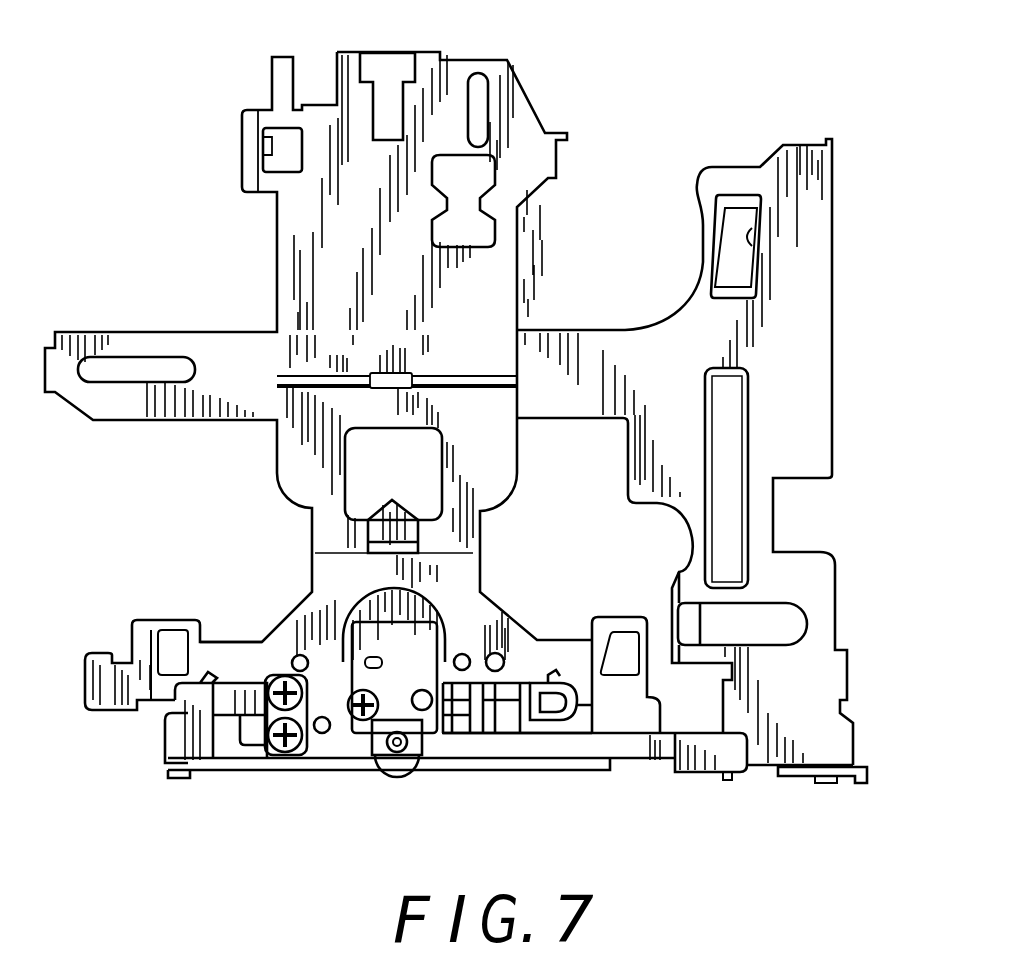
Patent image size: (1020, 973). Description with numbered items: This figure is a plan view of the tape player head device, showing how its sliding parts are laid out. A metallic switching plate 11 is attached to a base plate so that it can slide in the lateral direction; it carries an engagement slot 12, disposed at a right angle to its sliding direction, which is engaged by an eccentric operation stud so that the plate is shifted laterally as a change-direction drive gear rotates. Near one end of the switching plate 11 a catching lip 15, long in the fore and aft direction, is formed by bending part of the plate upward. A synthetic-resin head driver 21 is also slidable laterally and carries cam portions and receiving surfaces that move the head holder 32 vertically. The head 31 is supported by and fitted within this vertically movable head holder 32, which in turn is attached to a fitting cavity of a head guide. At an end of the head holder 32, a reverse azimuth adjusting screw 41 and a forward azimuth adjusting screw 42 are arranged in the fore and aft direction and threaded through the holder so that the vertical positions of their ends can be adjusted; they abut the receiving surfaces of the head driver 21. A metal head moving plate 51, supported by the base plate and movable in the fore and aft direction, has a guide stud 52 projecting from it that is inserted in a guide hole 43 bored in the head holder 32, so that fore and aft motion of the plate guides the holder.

The switching plate 11 is at (795, 368).
The engagement slot 12 is at (745, 237).
The catching lip 15 is at (733, 780).
The head driver 21 is at (690, 775).
The head 31 is at (413, 602).
The head holder 32 is at (488, 727).
The reverse azimuth adjusting screw 41 is at (296, 752).
The forward azimuth adjusting screw 42 is at (277, 677).
The guide hole 43 is at (375, 773).
The head moving plate 51 is at (500, 289).
The guide stud 52 is at (402, 777).